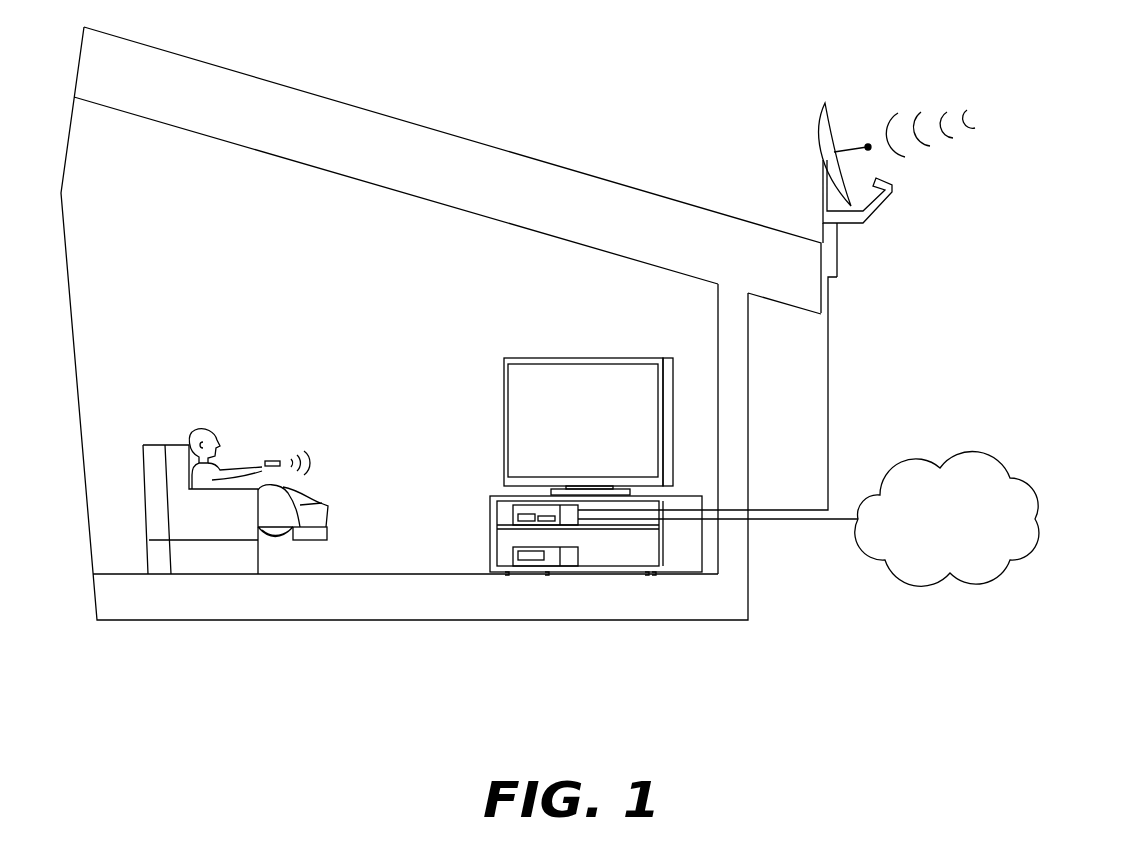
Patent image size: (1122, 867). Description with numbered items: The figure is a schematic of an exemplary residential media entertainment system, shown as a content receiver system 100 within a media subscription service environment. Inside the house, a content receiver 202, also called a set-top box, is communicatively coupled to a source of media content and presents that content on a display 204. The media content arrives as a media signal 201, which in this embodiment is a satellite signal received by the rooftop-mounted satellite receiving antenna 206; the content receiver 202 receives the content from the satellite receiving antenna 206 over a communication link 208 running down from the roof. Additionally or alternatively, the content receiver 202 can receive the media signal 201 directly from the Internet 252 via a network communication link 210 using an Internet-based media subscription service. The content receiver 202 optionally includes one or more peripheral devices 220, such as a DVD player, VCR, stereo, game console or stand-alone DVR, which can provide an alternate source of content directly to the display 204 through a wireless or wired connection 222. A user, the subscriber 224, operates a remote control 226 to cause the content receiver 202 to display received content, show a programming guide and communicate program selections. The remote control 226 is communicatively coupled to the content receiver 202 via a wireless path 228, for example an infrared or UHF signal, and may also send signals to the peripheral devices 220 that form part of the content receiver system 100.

The content receiver system 100 is at (678, 71).
The media signal 201 is at (1003, 108).
The content receiver 202 is at (517, 517).
The display 204 is at (588, 357).
The satellite receiving antenna 206 is at (834, 133).
The communication link 208 is at (829, 368).
The network communication link 210 is at (805, 521).
The peripheral device 220 is at (517, 552).
The wireless or wired connection 222 is at (677, 491).
The subscriber 224 is at (201, 429).
The remote control 226 is at (270, 460).
The wireless path 228 is at (337, 452).
The Internet 252 is at (980, 462).